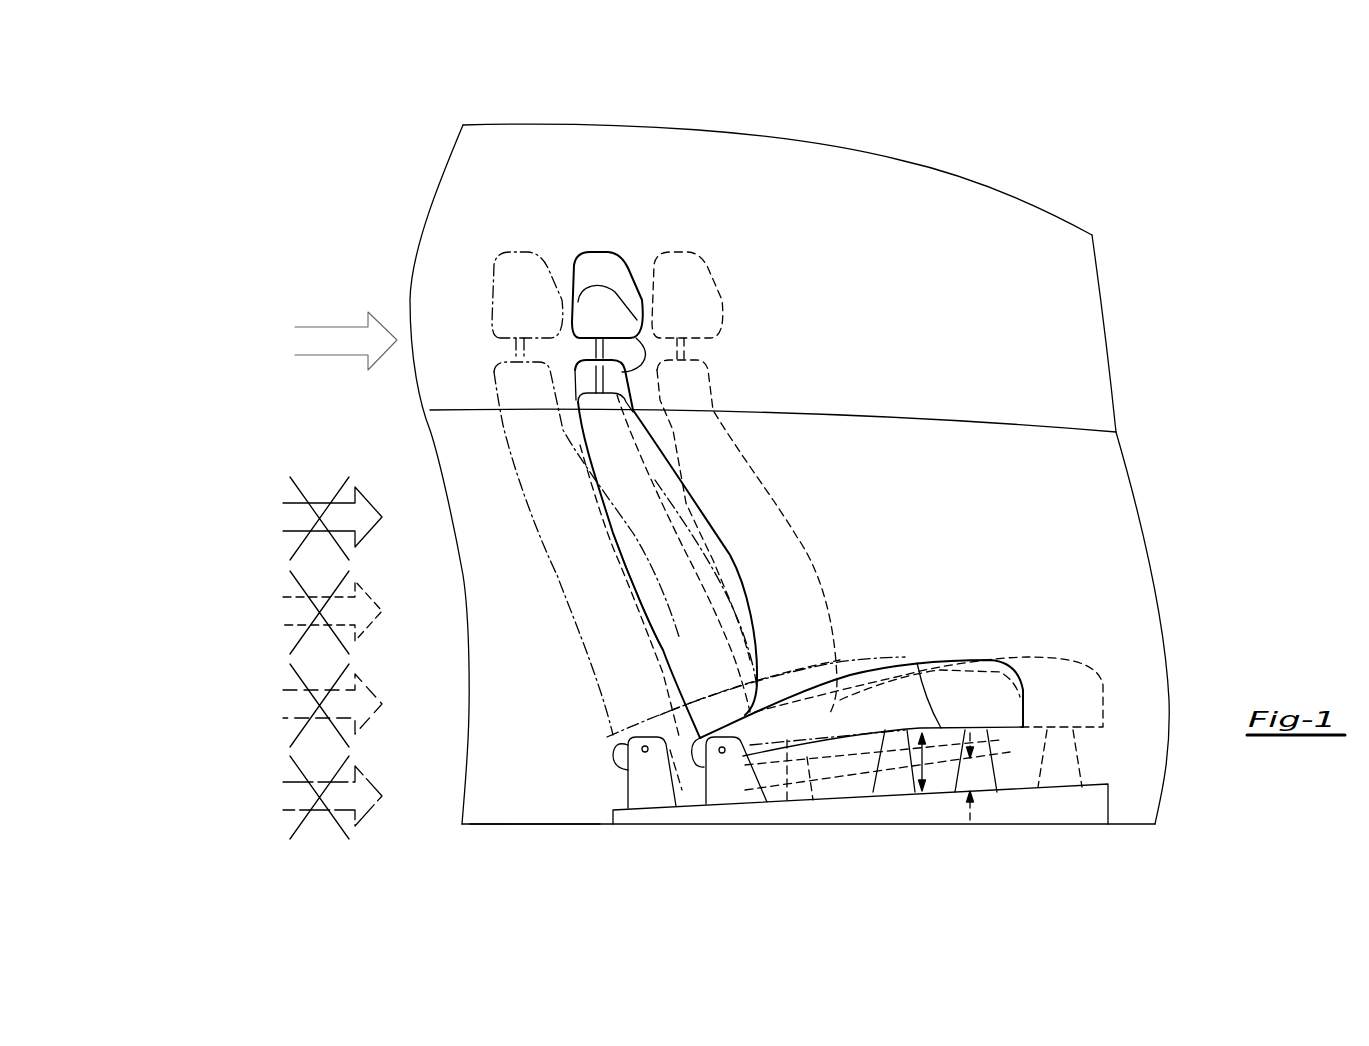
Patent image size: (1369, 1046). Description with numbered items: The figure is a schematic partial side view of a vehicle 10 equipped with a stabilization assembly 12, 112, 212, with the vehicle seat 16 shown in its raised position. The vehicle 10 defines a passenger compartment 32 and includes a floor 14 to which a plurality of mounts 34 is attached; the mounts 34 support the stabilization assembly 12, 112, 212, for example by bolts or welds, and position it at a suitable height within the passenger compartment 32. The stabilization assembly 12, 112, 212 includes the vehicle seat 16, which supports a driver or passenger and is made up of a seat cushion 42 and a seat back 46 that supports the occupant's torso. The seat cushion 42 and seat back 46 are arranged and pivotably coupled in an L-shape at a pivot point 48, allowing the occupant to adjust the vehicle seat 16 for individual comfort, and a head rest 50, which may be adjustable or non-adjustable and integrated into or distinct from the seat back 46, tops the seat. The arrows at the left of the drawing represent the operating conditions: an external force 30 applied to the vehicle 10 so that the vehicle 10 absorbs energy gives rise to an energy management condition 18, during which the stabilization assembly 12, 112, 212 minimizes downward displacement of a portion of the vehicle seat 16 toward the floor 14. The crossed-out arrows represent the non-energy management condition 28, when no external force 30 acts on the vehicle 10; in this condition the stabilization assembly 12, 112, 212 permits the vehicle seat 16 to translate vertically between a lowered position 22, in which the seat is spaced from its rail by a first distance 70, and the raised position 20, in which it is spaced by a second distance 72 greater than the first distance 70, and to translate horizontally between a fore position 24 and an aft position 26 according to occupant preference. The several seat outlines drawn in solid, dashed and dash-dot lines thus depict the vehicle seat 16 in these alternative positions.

The vehicle 10 is at (915, 160).
The stabilization assembly 12 is at (777, 519).
The stabilization assembly 112 is at (777, 519).
The stabilization assembly 212 is at (908, 588).
The floor 14 is at (503, 824).
The vehicle seat 16 is at (777, 580).
The energy management condition 18 is at (307, 258).
The raised position 20 is at (730, 553).
The lowered position 22 is at (590, 497).
The fore position 24 is at (763, 477).
The aft position 26 is at (590, 670).
The non-energy management condition 28 is at (270, 495).
The external force 30 is at (334, 327).
The passenger compartment 32 is at (1057, 313).
The plurality of mounts 34 is at (843, 812).
The seat cushion 42 is at (970, 657).
The seat back 46 is at (612, 575).
The pivot point 48 is at (723, 712).
The head rest 50 is at (620, 262).
The first distance 70 is at (971, 776).
The second distance 72 is at (924, 760).